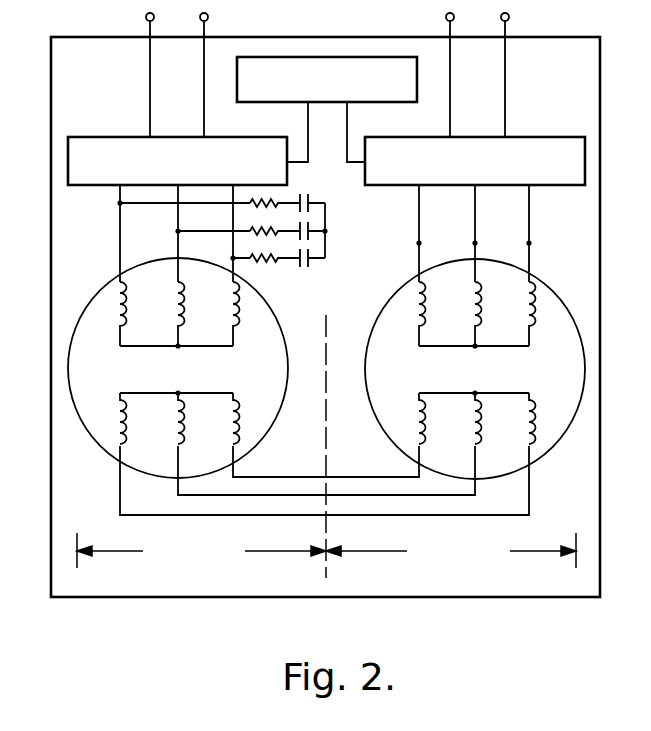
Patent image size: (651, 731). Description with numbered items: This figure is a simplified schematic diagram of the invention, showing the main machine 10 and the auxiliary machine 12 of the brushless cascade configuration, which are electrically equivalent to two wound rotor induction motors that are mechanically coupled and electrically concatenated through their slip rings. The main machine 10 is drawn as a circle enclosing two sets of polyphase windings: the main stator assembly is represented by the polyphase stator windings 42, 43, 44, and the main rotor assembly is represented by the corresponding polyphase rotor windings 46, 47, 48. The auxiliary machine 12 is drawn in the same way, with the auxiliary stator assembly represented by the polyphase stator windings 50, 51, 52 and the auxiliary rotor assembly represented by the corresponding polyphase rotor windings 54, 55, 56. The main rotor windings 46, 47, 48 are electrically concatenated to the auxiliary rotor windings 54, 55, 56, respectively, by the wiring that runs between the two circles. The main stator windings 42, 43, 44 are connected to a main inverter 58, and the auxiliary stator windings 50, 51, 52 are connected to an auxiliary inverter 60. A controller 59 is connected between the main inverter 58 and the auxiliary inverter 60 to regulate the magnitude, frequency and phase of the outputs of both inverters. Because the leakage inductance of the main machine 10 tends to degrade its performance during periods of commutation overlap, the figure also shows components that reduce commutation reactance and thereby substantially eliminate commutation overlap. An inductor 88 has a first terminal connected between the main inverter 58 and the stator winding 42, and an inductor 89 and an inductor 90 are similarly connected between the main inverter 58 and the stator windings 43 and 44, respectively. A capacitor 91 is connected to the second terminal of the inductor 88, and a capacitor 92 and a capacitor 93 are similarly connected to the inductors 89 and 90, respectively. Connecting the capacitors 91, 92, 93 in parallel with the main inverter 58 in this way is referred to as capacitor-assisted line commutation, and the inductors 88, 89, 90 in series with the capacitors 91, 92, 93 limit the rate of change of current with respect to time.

The main machine 10 is at (103, 292).
The auxiliary machine 12 is at (560, 304).
The main stator winding 42 is at (122, 306).
The main stator winding 43 is at (178, 296).
The main stator winding 44 is at (238, 318).
The main rotor winding 46 is at (122, 425).
The main rotor winding 47 is at (178, 425).
The main rotor winding 48 is at (233, 425).
The auxiliary stator winding 50 is at (419, 320).
The auxiliary stator winding 51 is at (474, 306).
The auxiliary stator winding 52 is at (536, 312).
The auxiliary rotor winding 54 is at (420, 428).
The auxiliary rotor winding 55 is at (475, 425).
The auxiliary rotor winding 56 is at (534, 440).
The main inverter 58 is at (138, 143).
The controller 59 is at (320, 60).
The auxiliary inverter 60 is at (558, 145).
The inductor 88 is at (255, 204).
The inductor 89 is at (256, 232).
The inductor 90 is at (267, 262).
The capacitor 91 is at (310, 197).
The capacitor 92 is at (310, 224).
The capacitor 93 is at (310, 262).